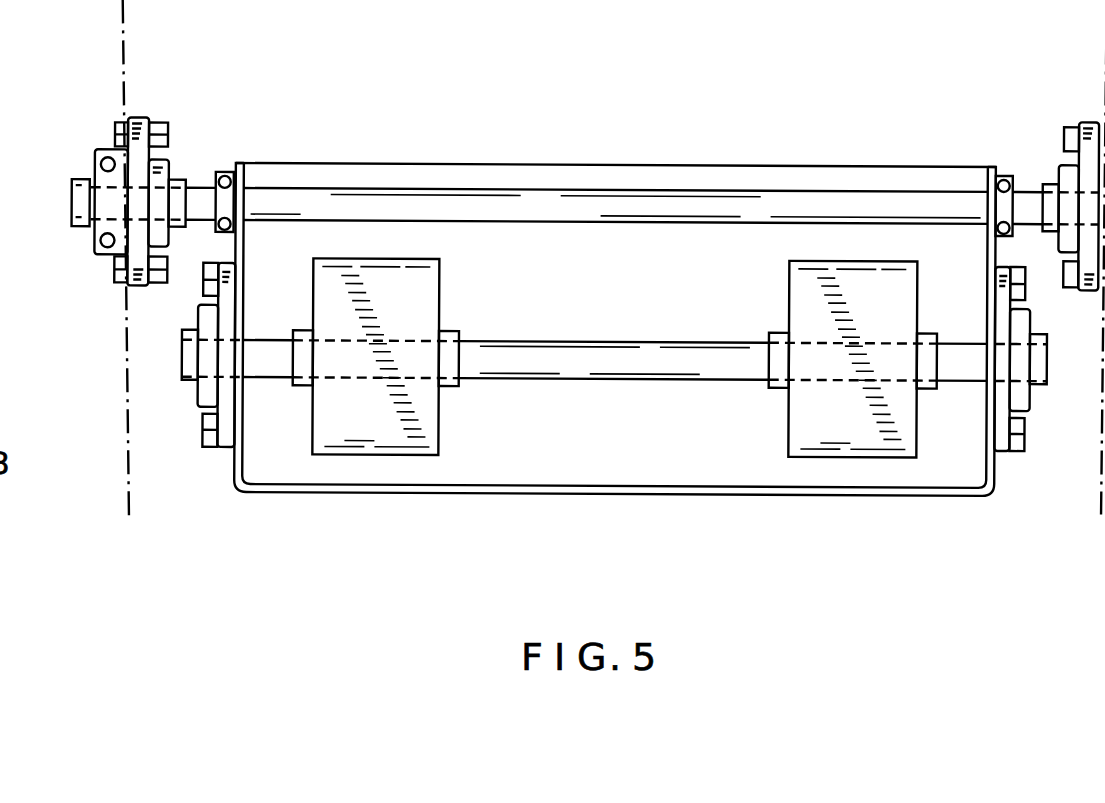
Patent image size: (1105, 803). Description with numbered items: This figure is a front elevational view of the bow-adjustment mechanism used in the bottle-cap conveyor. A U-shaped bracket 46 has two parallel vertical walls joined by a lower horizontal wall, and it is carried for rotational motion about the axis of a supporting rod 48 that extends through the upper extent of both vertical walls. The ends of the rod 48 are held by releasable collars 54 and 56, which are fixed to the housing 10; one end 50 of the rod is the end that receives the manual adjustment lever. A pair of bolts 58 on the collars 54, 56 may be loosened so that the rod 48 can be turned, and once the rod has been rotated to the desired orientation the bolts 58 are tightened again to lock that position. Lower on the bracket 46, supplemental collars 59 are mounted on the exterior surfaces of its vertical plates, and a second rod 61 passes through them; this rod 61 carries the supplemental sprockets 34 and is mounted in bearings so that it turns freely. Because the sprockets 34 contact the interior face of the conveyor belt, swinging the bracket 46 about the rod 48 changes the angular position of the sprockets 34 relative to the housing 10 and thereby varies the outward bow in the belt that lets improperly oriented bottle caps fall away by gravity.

The housing 10 is at (129, 494).
The supplemental sprockets 34 is at (436, 453).
The U-shaped bracket 46 is at (283, 494).
The supporting rod 48 is at (653, 200).
The end of rod 50 is at (71, 206).
The releasable collar 54 is at (106, 152).
The releasable collar 56 is at (1088, 125).
The bolts 58 is at (114, 272).
The supplemental collars 59 is at (1012, 447).
The rod 61 is at (653, 365).